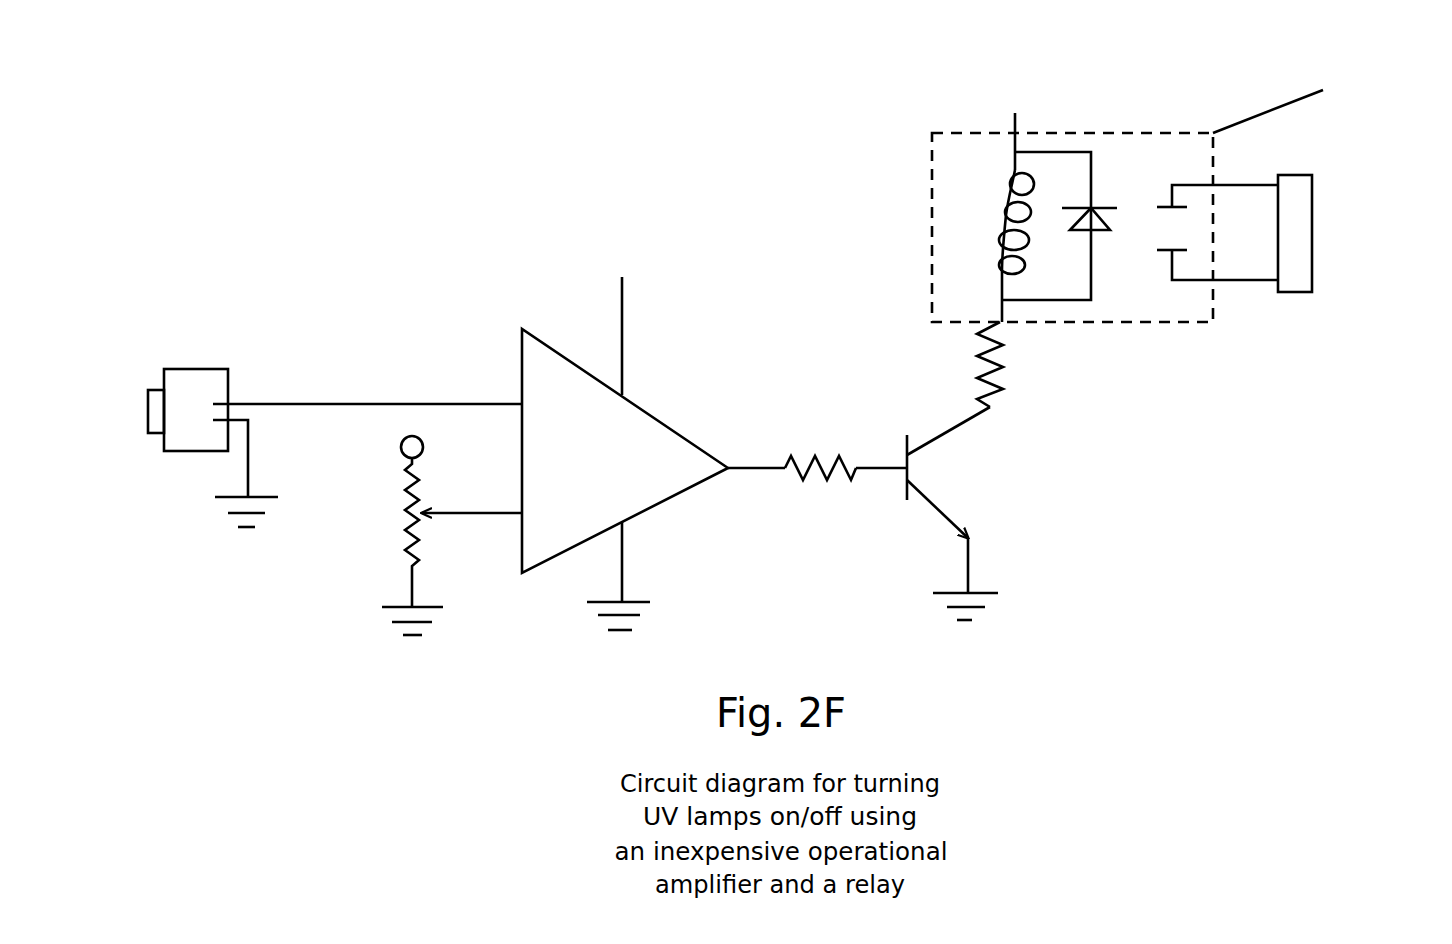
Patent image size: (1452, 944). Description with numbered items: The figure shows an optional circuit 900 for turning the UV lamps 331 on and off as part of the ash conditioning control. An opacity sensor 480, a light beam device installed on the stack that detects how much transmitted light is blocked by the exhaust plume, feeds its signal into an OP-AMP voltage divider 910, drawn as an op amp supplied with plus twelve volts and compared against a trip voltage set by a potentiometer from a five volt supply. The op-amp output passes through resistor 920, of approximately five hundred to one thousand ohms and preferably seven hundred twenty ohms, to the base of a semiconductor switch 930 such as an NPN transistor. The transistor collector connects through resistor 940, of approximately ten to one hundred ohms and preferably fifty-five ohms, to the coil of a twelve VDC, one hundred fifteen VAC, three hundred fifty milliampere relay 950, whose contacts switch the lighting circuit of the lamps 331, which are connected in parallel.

The circuit 900 is at (475, 150).
The opacity sensor 480 is at (196, 392).
The OP-AMP voltage divider 910 is at (653, 437).
The resistor 920 is at (812, 453).
The semiconductor switch 930 is at (910, 480).
The resistor 940 is at (1010, 358).
The relay 950 is at (953, 147).
The UV lamps 331 is at (1300, 252).